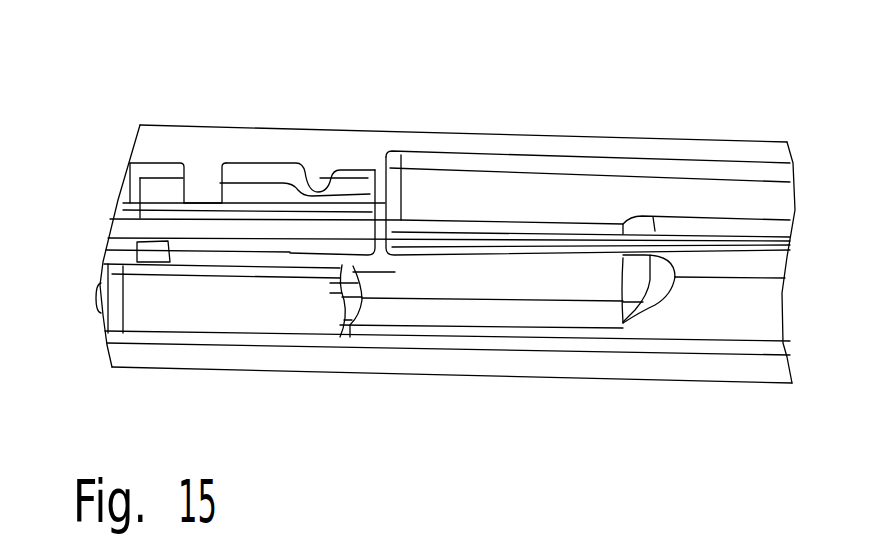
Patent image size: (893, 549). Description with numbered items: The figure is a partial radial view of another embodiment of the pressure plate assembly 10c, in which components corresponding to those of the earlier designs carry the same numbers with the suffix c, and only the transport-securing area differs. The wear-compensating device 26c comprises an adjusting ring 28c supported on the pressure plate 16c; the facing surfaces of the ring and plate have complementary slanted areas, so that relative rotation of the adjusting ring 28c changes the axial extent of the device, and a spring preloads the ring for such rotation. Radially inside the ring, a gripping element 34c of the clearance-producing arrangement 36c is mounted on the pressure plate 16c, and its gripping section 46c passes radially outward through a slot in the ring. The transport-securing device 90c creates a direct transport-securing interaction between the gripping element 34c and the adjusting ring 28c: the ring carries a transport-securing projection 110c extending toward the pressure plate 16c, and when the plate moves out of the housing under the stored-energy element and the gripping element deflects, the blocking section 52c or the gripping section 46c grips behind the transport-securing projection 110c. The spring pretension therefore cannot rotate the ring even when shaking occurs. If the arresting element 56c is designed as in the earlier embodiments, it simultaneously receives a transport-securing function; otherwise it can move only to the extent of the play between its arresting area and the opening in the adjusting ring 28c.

The pressure plate assembly 10c is at (738, 109).
The pressure plate 16c is at (718, 368).
The wear-compensating device 26c is at (678, 117).
The adjusting ring 28c is at (207, 137).
The gripping element 34c is at (357, 186).
The clearance-producing arrangement 36c is at (290, 254).
The gripping section 46c is at (247, 182).
The blocking section 52c is at (255, 173).
The arresting element 56c is at (281, 220).
The transport-securing device 90c is at (313, 105).
The transport-securing projection 110c is at (300, 183).